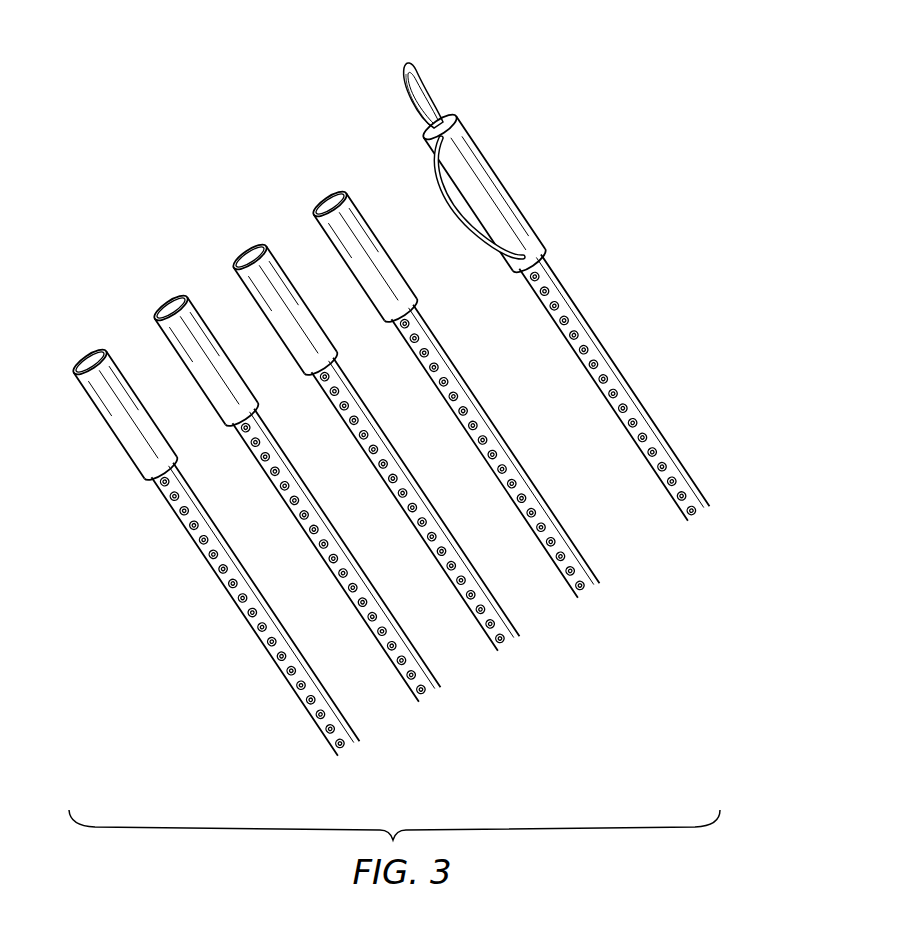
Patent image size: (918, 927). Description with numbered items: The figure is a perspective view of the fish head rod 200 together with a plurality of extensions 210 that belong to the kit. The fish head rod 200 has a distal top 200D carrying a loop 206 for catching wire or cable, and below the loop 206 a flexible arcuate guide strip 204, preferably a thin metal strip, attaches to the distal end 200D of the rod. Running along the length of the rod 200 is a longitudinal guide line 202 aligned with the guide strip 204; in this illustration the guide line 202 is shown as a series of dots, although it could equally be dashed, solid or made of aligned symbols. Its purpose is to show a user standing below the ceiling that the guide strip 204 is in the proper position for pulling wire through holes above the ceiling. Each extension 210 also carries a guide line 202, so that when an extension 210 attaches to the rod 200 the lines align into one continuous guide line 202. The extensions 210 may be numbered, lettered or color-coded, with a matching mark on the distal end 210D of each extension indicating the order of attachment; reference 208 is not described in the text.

The fish head rod 200 is at (399, 392).
The distal top of the fish head rod 200D is at (532, 238).
The longitudinal guide line 202 is at (450, 514).
The flexible arcuate guide strip 204 is at (460, 222).
The loop 206 is at (422, 80).
The row of apertures 208 is at (567, 310).
The extension 210 is at (235, 335).
The distal end of extension 210D is at (115, 437).